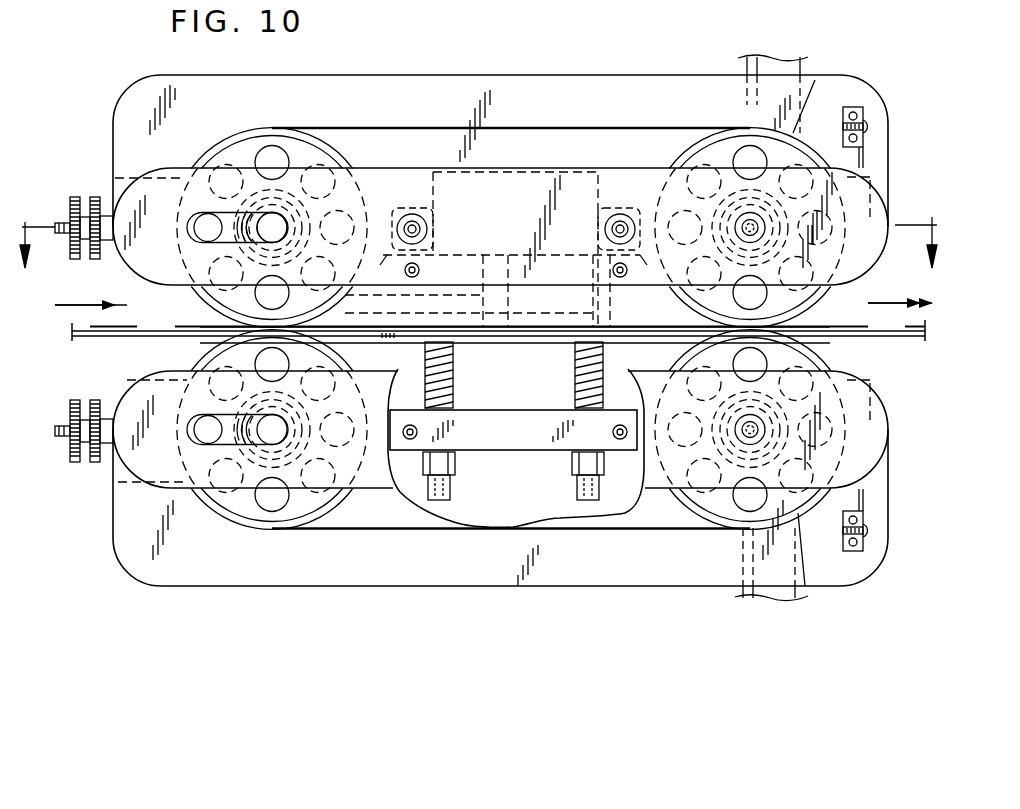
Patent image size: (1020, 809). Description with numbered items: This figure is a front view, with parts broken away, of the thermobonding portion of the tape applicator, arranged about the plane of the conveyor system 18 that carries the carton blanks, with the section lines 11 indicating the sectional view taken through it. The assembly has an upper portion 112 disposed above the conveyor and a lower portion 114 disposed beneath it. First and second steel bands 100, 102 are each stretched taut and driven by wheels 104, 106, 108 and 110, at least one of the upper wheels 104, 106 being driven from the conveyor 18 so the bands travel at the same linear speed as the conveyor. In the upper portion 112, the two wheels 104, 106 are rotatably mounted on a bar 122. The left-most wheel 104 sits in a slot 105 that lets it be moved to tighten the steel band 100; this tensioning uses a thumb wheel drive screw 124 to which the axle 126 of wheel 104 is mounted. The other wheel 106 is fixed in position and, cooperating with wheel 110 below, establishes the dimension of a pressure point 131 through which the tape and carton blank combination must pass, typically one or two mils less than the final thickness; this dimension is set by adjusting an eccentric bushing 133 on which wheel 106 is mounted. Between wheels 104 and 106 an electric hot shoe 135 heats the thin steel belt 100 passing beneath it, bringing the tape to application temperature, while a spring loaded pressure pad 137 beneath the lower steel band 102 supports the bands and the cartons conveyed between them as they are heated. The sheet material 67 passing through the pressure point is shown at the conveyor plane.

The section line 11- 11 is at (481, 251).
The conveyor system 18 is at (152, 336).
The sheet segments 67 is at (191, 327).
The first steel band 100 is at (387, 128).
The second steel band 102 is at (377, 528).
The wheel 104 is at (291, 138).
The slot 105 is at (232, 214).
The wheel 106 is at (815, 80).
The wheel 108 is at (215, 512).
The wheel 110 is at (805, 586).
The upper portion 112 is at (862, 62).
The lower portion 114 is at (867, 368).
The bar 122 is at (373, 168).
The thumb wheel drive screw 124 is at (92, 193).
The axle 126 is at (273, 216).
The pressure point 131 is at (798, 318).
The eccentric bushing 133 is at (745, 226).
The electric hot shoe 135 is at (672, 298).
The spring loaded pressure pad 137 is at (528, 342).